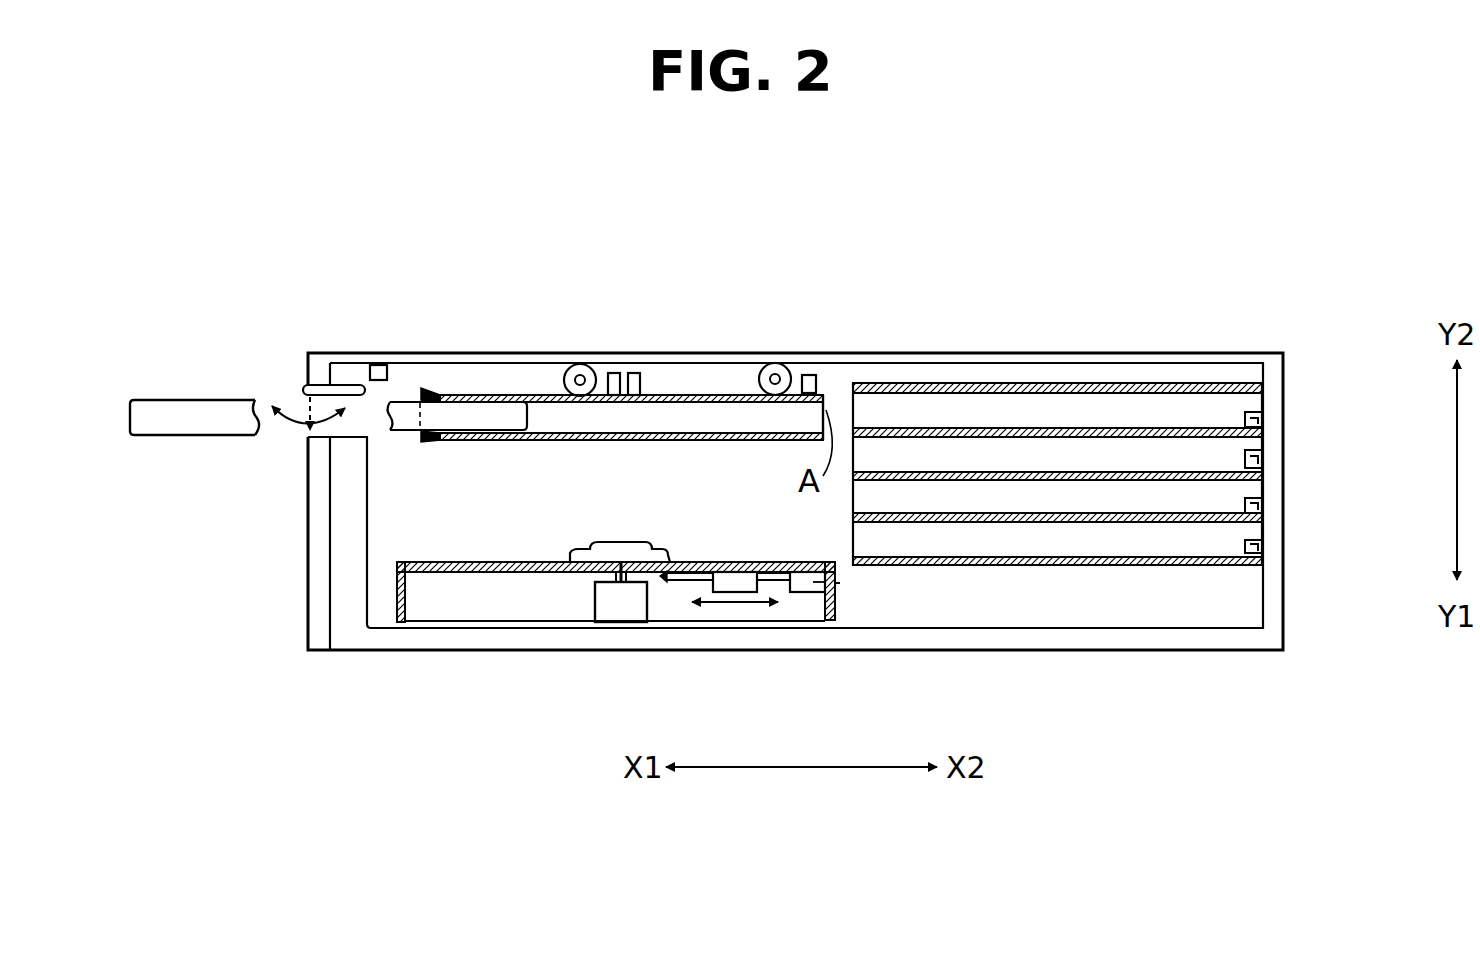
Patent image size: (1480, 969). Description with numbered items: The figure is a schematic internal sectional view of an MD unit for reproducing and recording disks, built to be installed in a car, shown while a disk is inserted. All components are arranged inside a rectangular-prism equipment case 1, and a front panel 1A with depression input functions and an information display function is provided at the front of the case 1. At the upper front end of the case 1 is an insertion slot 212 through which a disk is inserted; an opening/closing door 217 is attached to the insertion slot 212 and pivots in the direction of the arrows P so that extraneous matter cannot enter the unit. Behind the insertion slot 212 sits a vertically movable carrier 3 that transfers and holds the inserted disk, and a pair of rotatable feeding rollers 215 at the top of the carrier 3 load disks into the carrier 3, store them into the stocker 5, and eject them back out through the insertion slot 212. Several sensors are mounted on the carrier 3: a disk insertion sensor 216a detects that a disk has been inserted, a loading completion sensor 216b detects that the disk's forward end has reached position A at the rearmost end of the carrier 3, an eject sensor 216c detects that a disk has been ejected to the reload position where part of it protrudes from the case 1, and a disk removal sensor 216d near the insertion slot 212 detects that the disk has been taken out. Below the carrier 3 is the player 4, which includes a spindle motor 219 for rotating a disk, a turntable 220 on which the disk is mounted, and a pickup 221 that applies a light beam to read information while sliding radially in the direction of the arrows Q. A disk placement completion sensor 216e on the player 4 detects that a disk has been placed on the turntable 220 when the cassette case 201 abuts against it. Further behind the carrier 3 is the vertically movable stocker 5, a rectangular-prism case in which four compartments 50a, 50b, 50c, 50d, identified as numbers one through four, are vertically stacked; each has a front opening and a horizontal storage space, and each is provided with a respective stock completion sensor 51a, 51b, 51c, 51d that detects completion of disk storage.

The equipment case 1 is at (1276, 288).
The front panel 1A is at (315, 611).
The cassette case 201 is at (207, 415).
The insertion slot 212 is at (303, 392).
The opening/closing door 217 is at (355, 383).
The disk removal sensor 216d is at (388, 372).
The carrier 3 is at (495, 392).
The feeding rollers 215 is at (580, 364).
The disk insertion sensor 216a is at (614, 372).
The loading completion sensor 216b is at (810, 373).
The eject sensor 216c is at (635, 372).
The stocker 5 is at (1078, 392).
The compartment 50a is at (1057, 416).
The compartment 50b is at (1057, 459).
The compartment 50c is at (1057, 502).
The compartment 50d is at (973, 540).
The stock completion sensor 51a is at (1256, 420).
The stock completion sensor 51b is at (1256, 461).
The stock completion sensor 51c is at (1256, 506).
The stock completion sensor 51d is at (1256, 548).
The player 4 is at (398, 613).
The spindle motor 219 is at (625, 624).
The turntable 220 is at (588, 545).
The pickup 221 is at (738, 568).
The disk placement completion sensor 216e is at (838, 582).